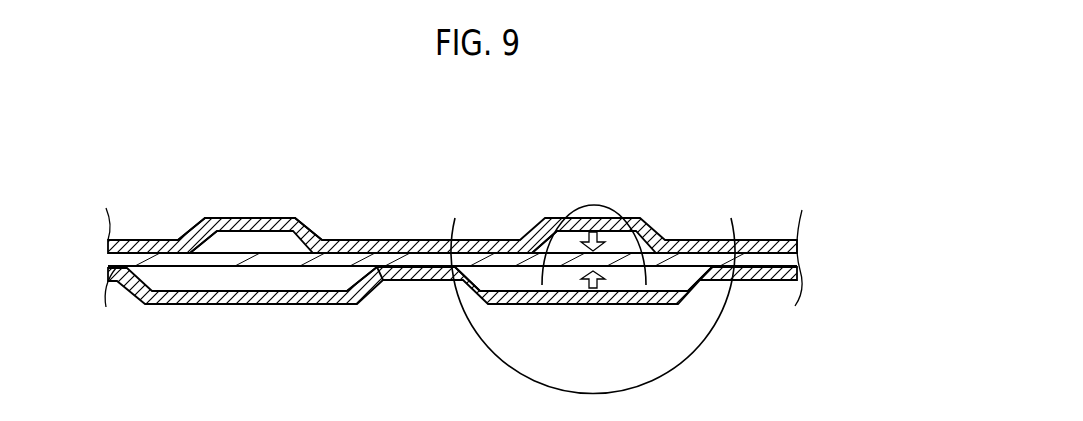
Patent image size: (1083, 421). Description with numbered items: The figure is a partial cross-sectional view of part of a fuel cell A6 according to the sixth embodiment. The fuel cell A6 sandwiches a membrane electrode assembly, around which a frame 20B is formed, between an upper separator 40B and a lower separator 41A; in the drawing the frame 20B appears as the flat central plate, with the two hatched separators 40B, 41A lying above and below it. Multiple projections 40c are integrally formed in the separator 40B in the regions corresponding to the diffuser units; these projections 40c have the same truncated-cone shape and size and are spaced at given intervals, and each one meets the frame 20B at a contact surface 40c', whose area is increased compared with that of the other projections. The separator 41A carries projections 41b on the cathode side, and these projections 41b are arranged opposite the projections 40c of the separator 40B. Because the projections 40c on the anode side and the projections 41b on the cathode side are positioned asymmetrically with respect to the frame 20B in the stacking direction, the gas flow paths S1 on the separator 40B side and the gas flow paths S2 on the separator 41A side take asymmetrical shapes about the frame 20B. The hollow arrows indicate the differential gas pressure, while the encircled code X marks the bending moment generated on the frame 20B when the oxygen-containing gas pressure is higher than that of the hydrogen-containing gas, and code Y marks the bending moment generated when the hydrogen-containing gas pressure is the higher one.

The fuel cell A6 is at (115, 189).
The projections 40c is at (452, 215).
The contact surface 40c' is at (488, 211).
The separator 40B is at (307, 220).
The frame 20B is at (806, 257).
The separator 41A is at (142, 309).
The projections 41b is at (401, 281).
The gas flow paths S1 is at (250, 242).
The gas flow paths S2 is at (225, 282).
The bending moment X is at (600, 195).
The bending moment Y is at (585, 328).